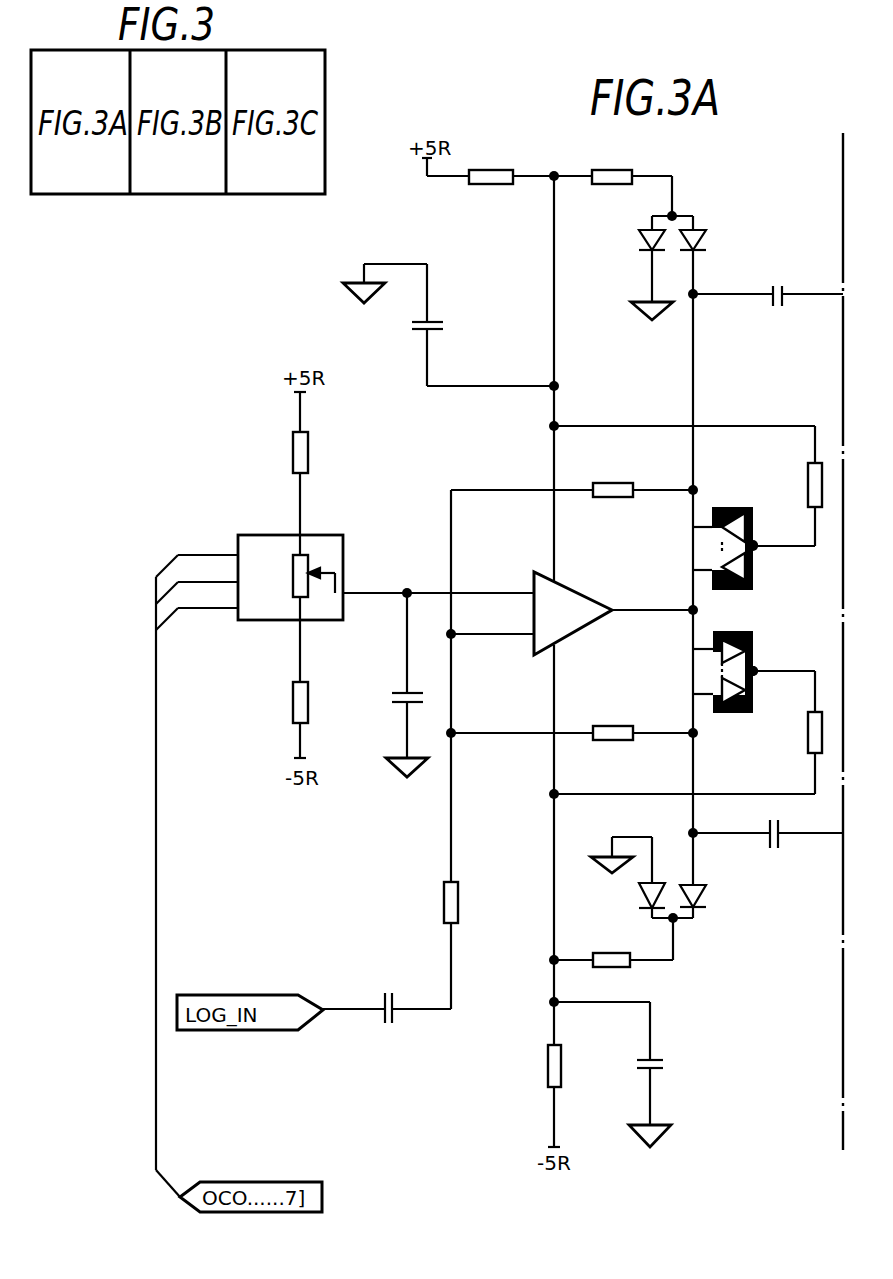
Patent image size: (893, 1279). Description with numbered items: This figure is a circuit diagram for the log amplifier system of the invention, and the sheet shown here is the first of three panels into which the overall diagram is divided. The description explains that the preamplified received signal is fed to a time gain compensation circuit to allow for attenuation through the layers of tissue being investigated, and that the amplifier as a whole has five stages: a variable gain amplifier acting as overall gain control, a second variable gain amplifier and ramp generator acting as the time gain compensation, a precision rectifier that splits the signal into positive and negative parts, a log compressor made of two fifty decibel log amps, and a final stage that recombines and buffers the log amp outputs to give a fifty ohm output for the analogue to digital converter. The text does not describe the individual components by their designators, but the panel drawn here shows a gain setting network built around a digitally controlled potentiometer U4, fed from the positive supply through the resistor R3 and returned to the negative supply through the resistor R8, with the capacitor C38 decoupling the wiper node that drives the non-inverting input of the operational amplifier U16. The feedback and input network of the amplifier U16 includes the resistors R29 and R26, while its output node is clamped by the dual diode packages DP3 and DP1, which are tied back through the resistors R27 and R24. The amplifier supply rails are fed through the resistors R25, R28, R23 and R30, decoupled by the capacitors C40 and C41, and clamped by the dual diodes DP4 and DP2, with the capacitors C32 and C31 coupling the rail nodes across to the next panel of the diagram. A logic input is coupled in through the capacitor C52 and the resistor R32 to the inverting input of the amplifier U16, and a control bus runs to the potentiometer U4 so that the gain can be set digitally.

The resistor 10R R25 is at (491, 179).
The resistor 390R R28 is at (614, 179).
The dual diode BAW56 DP4 is at (713, 230).
The capacitor 1nF C32 is at (777, 300).
The capacitor 0.1uF C40 is at (458, 328).
The resistor 10K R3 is at (324, 454).
The digital potentiometer X9C102 U4 is at (338, 533).
The resistor 820R R29 is at (618, 490).
The operational amplifier EL2130 U16 is at (592, 580).
The resistor 390R R27 is at (790, 480).
The dual diode BAW56 DP3 is at (753, 547).
The capacitor 0.1uF C38 is at (379, 702).
The resistor 10K R8 is at (283, 704).
The dual diode BAV70 DP1 is at (756, 684).
The resistor 820R R26 is at (619, 735).
The resistor 390R R24 is at (805, 738).
The capacitor 1nF C31 is at (797, 839).
The resistor 50R R32 is at (473, 904).
The dual diode BAV70 DP2 is at (711, 908).
The capacitor 1nF C52 is at (392, 1009).
The resistor 390R R23 is at (618, 960).
The resistor 10R R30 is at (577, 1069).
The capacitor 0.1uF C41 is at (684, 1068).